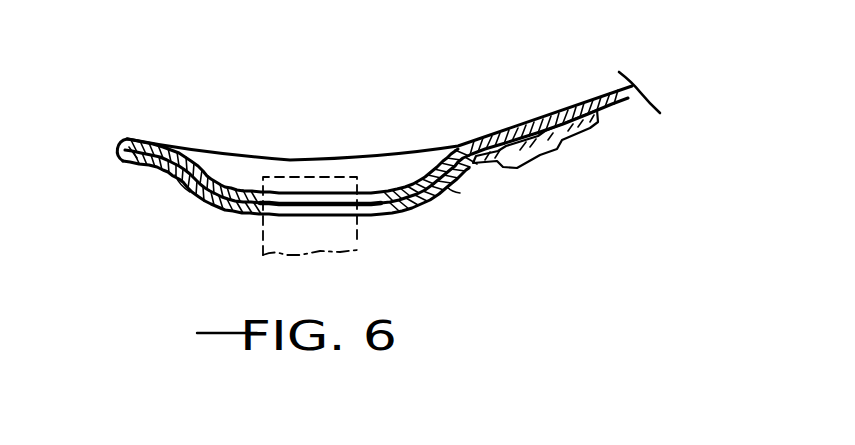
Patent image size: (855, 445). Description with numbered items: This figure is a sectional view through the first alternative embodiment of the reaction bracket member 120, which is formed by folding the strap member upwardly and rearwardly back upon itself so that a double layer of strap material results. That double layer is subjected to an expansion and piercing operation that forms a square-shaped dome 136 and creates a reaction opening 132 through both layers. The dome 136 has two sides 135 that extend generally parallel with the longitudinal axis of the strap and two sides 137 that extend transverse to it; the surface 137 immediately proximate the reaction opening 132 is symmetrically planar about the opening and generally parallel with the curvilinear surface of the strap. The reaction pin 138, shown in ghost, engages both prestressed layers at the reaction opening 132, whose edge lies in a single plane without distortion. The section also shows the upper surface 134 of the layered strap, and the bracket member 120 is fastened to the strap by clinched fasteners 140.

The reaction bracket member 120 is at (148, 138).
The reaction opening 132 is at (305, 200).
The upper surface 134 is at (463, 144).
The sides 135 is at (238, 188).
The dome 136 is at (218, 213).
The sides 137 is at (170, 175).
The reaction pin 138 is at (360, 238).
The clinched fasteners 140 is at (545, 158).